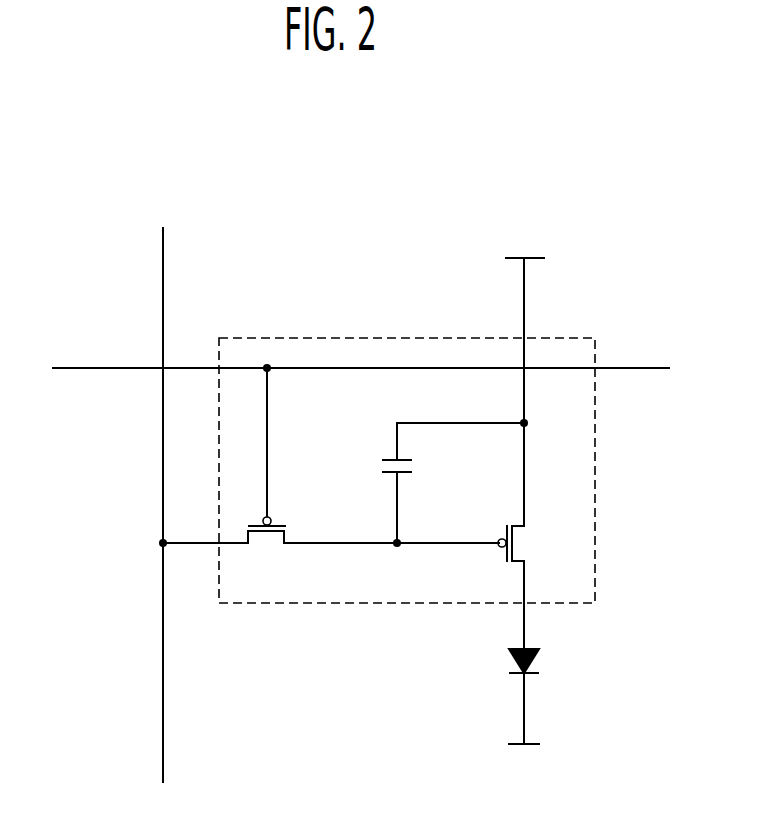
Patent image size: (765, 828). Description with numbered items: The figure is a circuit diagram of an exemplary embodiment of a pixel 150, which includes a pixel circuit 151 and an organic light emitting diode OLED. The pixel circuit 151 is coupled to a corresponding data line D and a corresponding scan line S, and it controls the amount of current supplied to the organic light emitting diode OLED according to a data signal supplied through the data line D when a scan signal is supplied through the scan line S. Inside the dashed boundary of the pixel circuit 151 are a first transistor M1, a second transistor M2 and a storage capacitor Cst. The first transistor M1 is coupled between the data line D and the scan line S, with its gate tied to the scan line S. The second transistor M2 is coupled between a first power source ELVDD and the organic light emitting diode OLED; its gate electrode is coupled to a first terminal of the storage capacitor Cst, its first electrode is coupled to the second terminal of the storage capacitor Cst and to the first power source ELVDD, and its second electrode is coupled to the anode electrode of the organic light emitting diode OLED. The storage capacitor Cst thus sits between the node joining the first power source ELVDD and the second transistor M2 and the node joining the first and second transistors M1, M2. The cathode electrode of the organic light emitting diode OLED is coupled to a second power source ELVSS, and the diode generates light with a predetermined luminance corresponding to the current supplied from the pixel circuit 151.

The pixel 150 is at (624, 179).
The pixel circuit 151 is at (576, 337).
The data line D is at (165, 489).
The scan line S is at (352, 367).
The first power source ELVDD is at (526, 325).
The second power source ELVSS is at (522, 727).
The organic light emitting diode OLED is at (550, 642).
The first transistor M1 is at (278, 466).
The second transistor M2 is at (471, 513).
The storage capacitor Cst is at (440, 481).